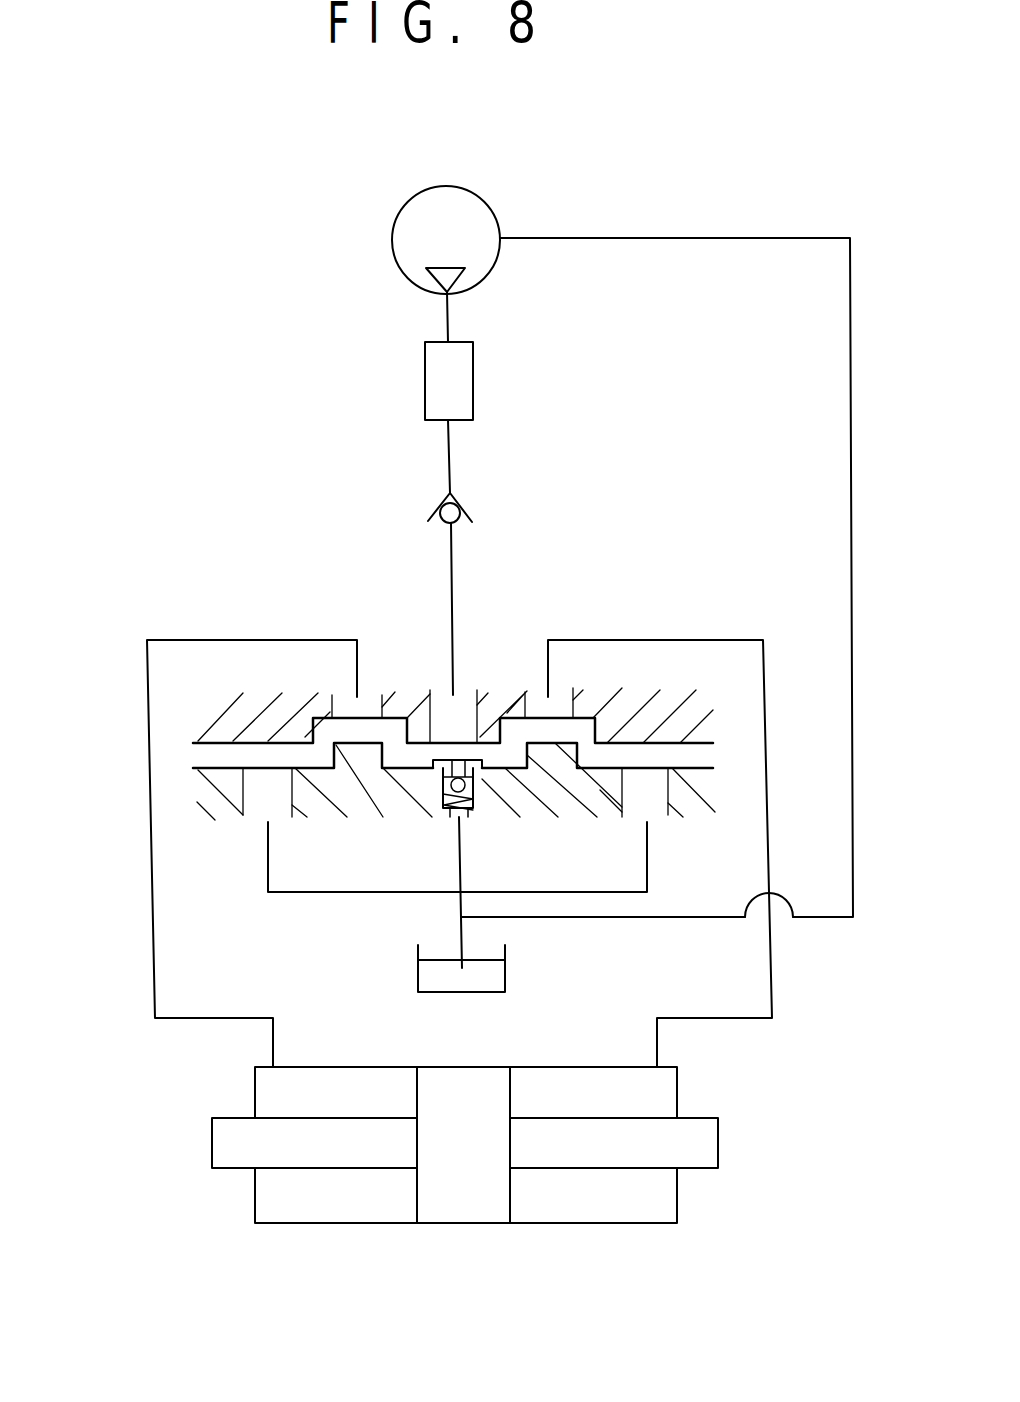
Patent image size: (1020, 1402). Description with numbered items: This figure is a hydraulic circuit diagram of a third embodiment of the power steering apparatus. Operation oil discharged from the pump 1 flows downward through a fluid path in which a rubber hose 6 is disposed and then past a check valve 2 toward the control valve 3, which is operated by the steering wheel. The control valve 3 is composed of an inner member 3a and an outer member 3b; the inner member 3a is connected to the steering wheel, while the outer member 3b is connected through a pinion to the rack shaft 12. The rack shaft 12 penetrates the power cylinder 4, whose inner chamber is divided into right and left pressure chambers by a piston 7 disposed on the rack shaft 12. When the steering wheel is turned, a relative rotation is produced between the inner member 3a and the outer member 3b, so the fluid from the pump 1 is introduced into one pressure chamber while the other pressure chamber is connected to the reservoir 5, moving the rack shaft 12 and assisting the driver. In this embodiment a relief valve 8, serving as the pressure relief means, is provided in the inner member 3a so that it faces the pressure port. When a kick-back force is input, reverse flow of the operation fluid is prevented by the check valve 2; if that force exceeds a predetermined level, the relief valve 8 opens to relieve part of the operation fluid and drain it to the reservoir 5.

The pump 1 is at (463, 212).
The check valve 2 is at (433, 485).
The control valve 3 is at (222, 664).
The inner member 3a is at (218, 803).
The outer member 3b is at (218, 717).
The power cylinder 4 is at (232, 1199).
The reservoir 5 is at (433, 973).
The rubber hose 6 is at (442, 367).
The piston 7 is at (455, 1083).
The relief valve 8 is at (436, 814).
The rack shaft 12 is at (700, 1137).